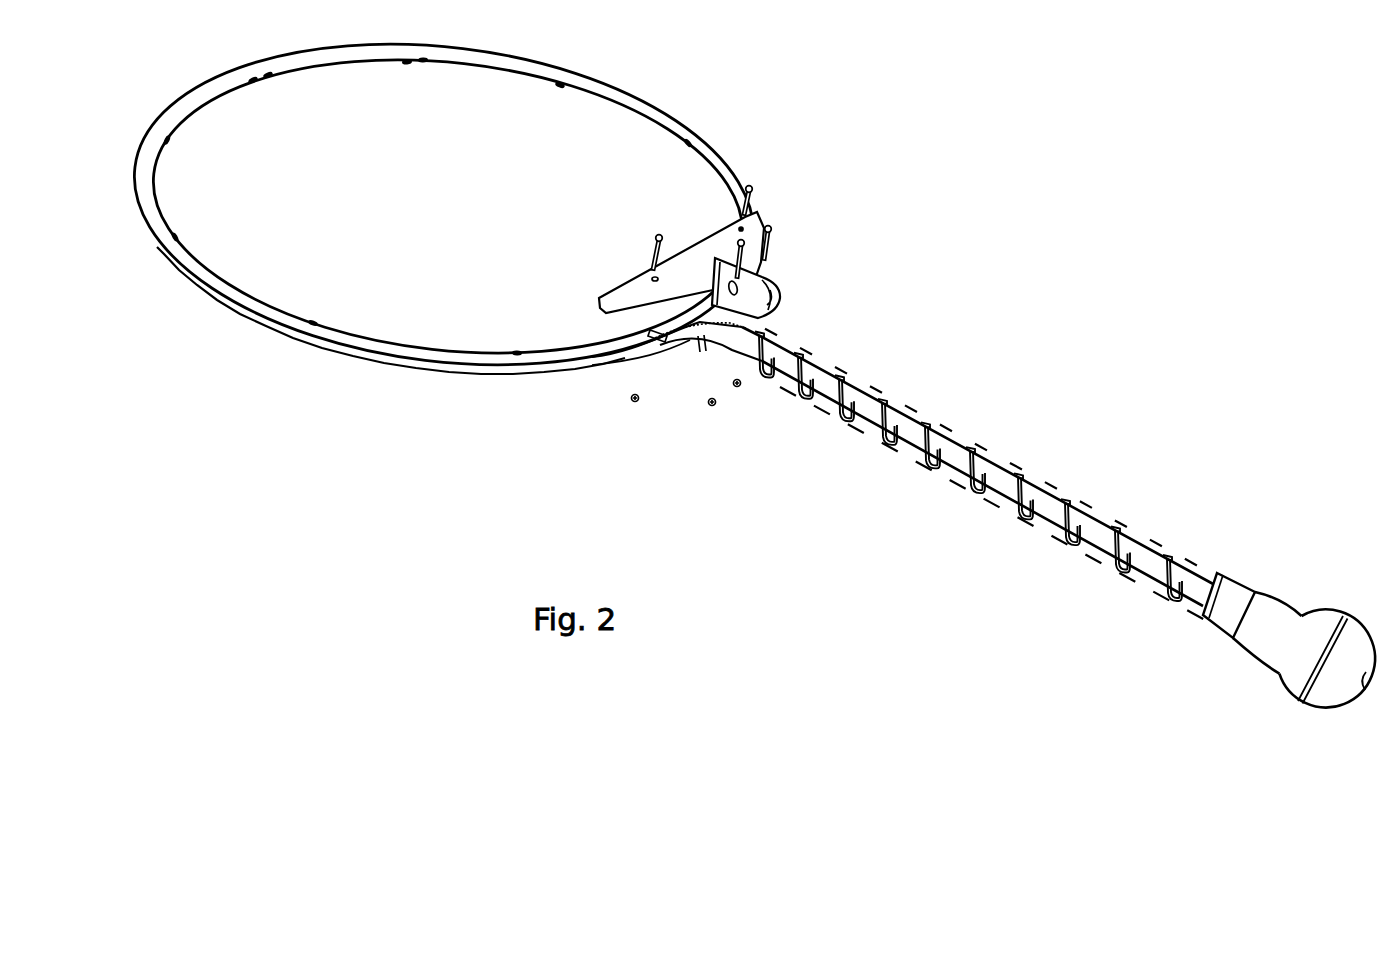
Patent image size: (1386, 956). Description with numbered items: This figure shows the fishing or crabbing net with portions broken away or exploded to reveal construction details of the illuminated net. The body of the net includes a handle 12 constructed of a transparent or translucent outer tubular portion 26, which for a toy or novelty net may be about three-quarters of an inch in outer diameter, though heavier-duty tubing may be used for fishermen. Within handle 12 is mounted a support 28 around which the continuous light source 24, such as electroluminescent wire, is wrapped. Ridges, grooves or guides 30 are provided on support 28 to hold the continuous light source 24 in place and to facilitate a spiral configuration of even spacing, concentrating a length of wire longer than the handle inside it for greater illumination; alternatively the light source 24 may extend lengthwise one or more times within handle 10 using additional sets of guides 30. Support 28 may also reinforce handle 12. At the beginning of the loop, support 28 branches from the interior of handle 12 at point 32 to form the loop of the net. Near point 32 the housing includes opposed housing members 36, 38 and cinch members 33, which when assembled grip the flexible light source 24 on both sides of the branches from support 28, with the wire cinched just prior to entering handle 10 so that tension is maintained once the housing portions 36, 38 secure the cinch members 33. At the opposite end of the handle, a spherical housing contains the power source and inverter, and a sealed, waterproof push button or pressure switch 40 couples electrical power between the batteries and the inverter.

The handle 10 is at (1026, 326).
The handle 12 is at (953, 433).
The continuous light source 24 is at (535, 368).
The outer tubular portion 26 is at (1067, 503).
The support 28 is at (853, 400).
The ridges, grooves or guides 30 is at (1030, 518).
The point 32 is at (697, 340).
The cinch member 33 is at (680, 333).
The housing member 36 is at (643, 267).
The housing member 38 is at (658, 370).
The push button or pressure switch 40 is at (1365, 690).